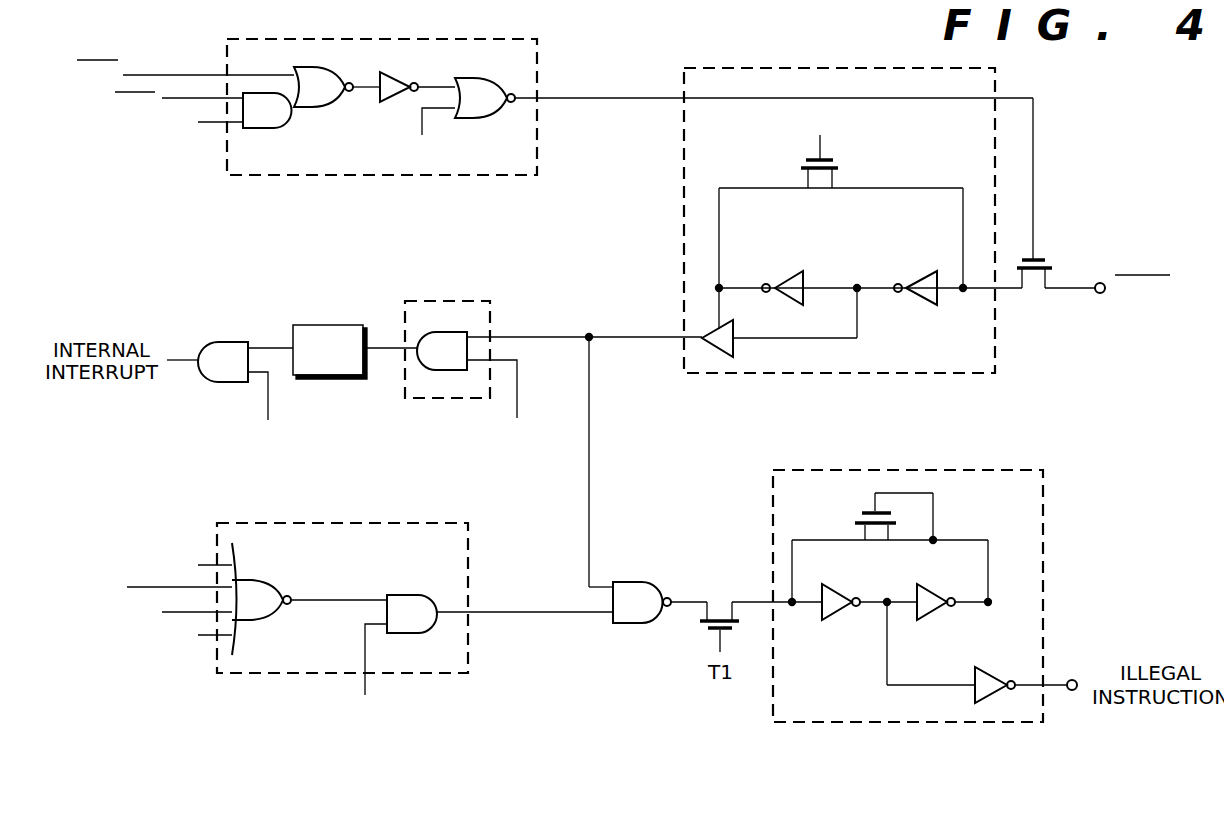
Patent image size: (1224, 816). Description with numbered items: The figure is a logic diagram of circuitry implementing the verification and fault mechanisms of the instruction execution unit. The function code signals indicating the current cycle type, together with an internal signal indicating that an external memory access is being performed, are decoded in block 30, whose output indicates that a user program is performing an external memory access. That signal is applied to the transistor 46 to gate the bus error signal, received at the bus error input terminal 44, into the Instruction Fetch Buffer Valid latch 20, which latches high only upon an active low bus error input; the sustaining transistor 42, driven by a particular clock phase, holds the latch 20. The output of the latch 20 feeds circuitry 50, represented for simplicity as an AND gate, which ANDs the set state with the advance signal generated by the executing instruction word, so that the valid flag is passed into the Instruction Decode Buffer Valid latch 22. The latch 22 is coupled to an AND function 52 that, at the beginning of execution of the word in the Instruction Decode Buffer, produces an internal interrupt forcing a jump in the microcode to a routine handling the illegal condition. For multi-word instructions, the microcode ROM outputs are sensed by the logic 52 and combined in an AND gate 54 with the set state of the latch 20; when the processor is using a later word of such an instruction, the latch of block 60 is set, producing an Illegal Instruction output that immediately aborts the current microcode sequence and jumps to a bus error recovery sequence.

The block 30 is at (375, 38).
The Instruction Fetch Buffer Valid latch 20 is at (683, 296).
The sustaining transistor 42 is at (838, 165).
The transistor 46 is at (1050, 262).
The terminal 44 is at (1099, 297).
The AND function 52 is at (246, 342).
The IDBV latch 22 is at (348, 325).
The circuitry 50 is at (437, 400).
The AND gate 54 is at (635, 583).
The latch 60 is at (772, 548).